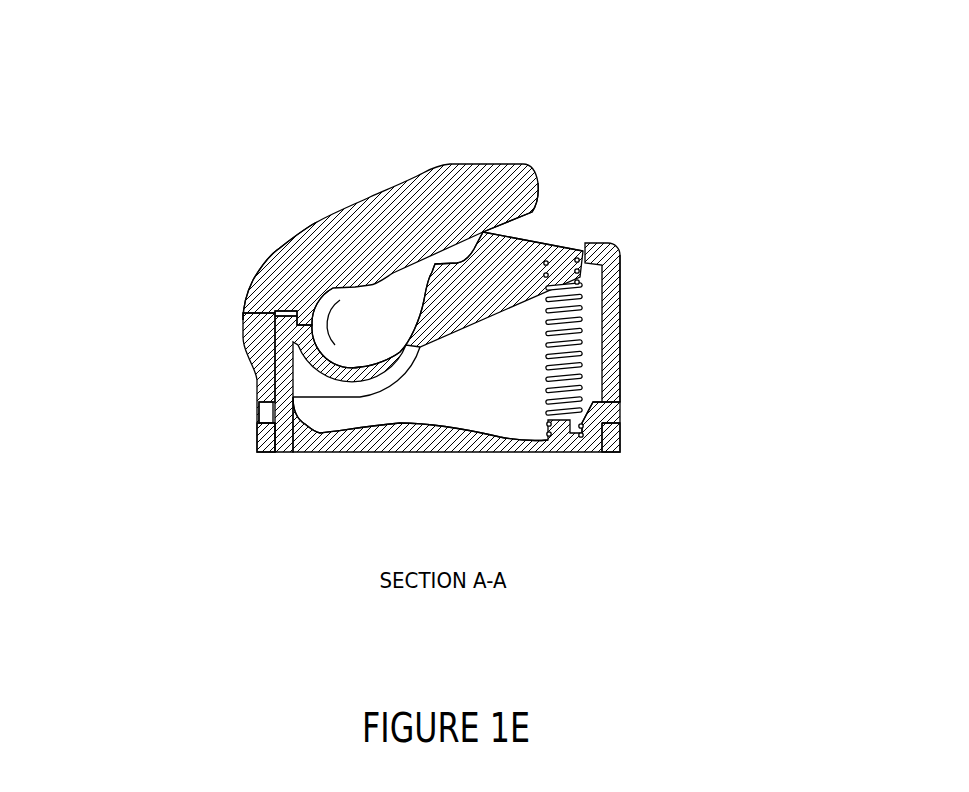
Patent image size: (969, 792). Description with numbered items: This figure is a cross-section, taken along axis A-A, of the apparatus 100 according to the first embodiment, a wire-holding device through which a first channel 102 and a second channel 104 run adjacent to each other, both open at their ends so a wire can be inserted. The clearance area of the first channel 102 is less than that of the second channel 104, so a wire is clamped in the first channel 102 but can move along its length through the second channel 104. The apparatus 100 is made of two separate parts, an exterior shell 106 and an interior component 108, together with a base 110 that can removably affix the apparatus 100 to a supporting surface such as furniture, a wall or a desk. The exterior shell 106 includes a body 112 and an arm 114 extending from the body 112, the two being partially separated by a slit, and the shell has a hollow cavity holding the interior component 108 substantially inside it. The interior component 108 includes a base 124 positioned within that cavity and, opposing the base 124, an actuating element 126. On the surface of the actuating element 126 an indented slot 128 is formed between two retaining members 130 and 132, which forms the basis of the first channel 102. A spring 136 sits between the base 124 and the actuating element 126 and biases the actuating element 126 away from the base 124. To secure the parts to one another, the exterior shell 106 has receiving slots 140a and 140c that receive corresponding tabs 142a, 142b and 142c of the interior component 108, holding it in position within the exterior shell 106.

The apparatus 100 is at (240, 105).
The first channel 102 is at (465, 249).
The second channel 104 is at (317, 302).
The exterior shell 106 is at (248, 360).
The interior component 108 is at (567, 247).
The base 110 is at (568, 453).
The body 112 is at (620, 360).
The arm 114 is at (313, 220).
The base 124 is at (315, 438).
The actuating element 126 is at (537, 241).
The indented slot 128 is at (468, 251).
The retaining member 130 is at (447, 250).
The retaining member 132 is at (483, 232).
The spring 136 is at (584, 314).
The receiving slot 140a is at (620, 413).
The receiving slot 140c is at (352, 323).
The tab 142a is at (270, 410).
The tab 142b is at (258, 427).
The tab 142c is at (277, 312).